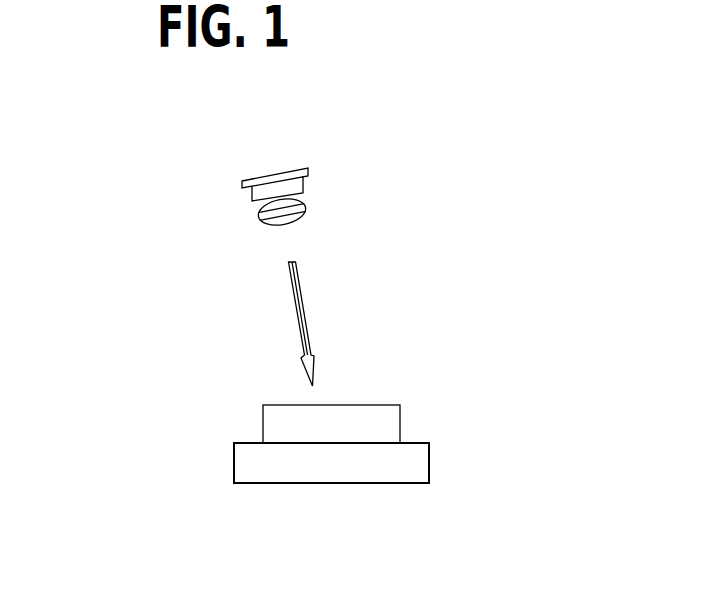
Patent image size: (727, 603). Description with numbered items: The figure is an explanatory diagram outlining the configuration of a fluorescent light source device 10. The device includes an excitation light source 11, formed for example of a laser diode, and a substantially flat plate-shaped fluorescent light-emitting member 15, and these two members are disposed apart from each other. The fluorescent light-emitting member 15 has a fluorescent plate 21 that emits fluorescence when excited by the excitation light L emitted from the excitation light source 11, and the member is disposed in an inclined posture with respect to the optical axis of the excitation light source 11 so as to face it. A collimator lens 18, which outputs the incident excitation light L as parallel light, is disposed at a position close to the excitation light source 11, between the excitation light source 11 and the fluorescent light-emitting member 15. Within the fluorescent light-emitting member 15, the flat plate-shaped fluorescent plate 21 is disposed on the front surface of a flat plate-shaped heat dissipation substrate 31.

The fluorescent light source device 10 is at (117, 165).
The excitation light source 11 is at (252, 199).
The collimator lens 18 is at (306, 206).
The excitation light L is at (288, 267).
The fluorescent plate 21 is at (382, 403).
The fluorescent light-emitting member 15 is at (402, 403).
The heat dissipation substrate 31 is at (233, 463).